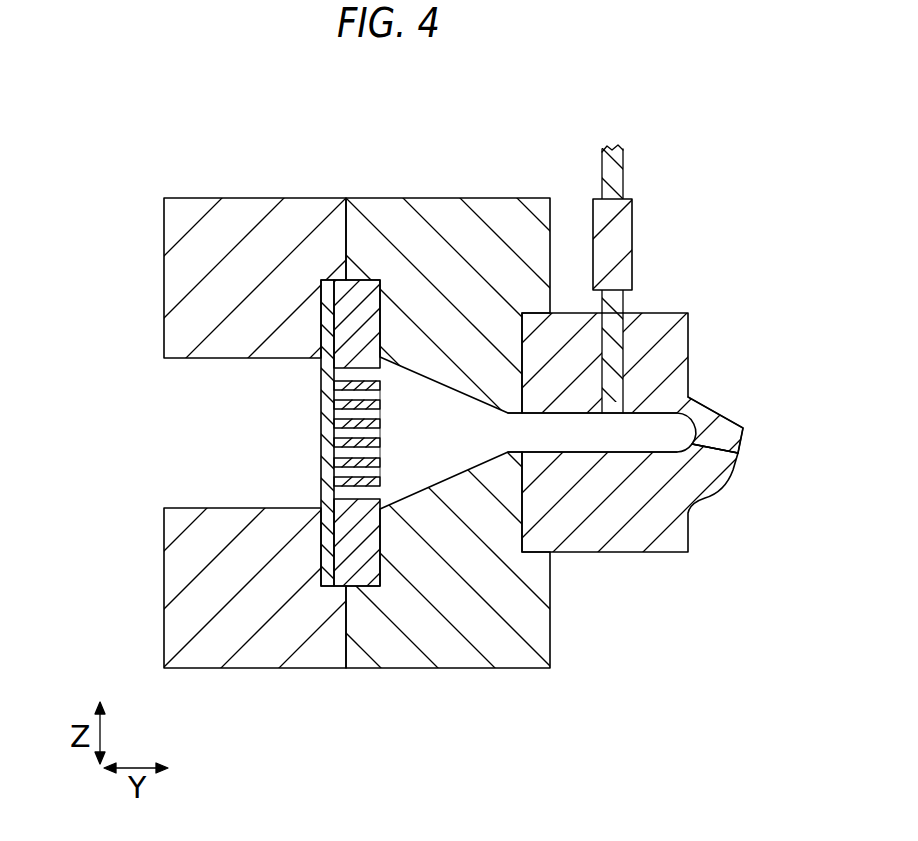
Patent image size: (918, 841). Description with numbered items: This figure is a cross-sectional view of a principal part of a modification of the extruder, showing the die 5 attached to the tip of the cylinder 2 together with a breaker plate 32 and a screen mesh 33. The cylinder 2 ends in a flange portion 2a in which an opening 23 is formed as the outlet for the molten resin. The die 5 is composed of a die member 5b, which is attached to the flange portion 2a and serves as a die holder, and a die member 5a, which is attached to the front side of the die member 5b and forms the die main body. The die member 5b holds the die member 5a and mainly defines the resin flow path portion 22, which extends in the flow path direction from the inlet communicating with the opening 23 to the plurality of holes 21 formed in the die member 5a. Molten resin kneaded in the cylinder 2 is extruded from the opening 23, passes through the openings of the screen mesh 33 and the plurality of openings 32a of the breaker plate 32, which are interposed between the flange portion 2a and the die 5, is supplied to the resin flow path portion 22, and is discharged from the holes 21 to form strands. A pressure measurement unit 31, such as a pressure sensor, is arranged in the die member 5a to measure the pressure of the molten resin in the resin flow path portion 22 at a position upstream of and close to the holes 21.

The cylinder 2 is at (423, 470).
The flange portion 2a is at (188, 222).
The die 5 is at (459, 470).
The die member 5a is at (672, 335).
The die member 5b is at (509, 212).
The hole 21 is at (730, 458).
The resin flow path portion 22 is at (612, 440).
The opening 23 is at (202, 433).
The pressure measurement unit 31 is at (617, 387).
The breaker plate 32 is at (368, 293).
The opening 32a is at (370, 472).
The screen mesh 33 is at (327, 378).